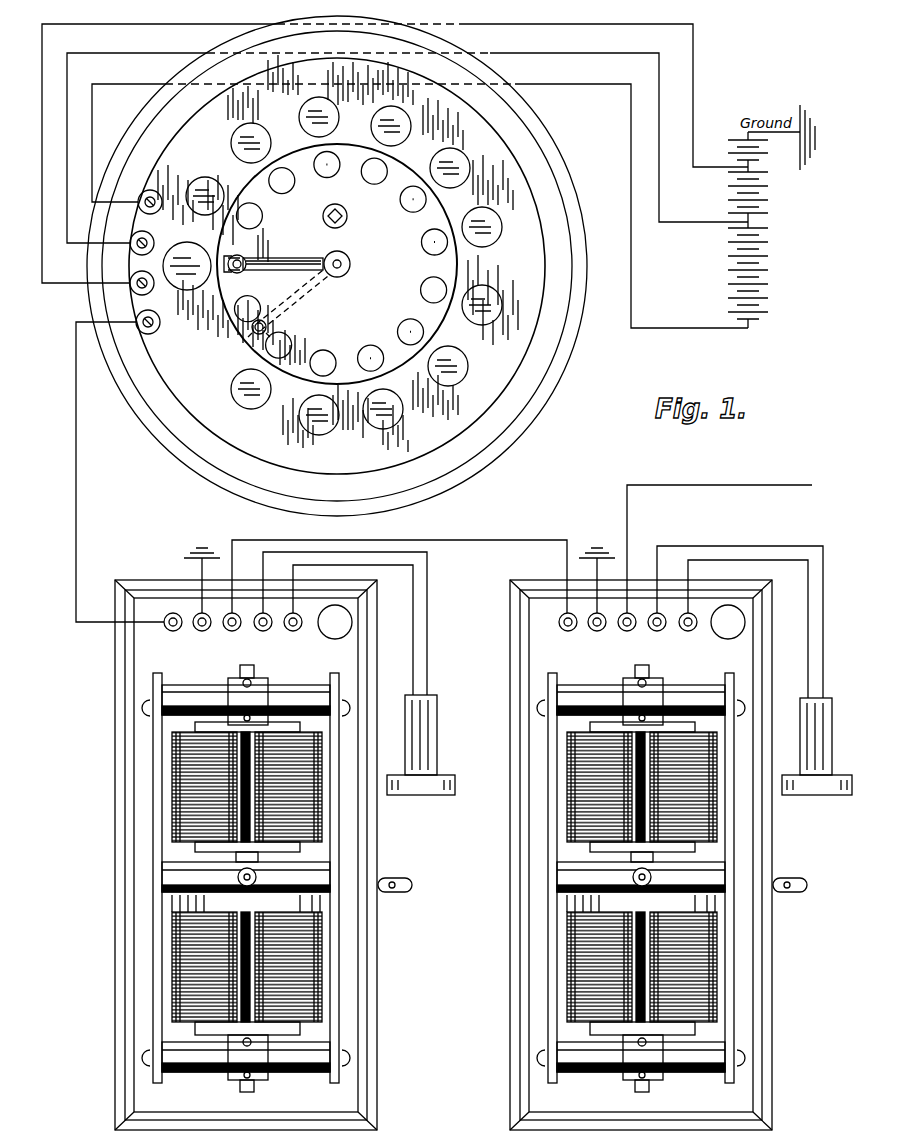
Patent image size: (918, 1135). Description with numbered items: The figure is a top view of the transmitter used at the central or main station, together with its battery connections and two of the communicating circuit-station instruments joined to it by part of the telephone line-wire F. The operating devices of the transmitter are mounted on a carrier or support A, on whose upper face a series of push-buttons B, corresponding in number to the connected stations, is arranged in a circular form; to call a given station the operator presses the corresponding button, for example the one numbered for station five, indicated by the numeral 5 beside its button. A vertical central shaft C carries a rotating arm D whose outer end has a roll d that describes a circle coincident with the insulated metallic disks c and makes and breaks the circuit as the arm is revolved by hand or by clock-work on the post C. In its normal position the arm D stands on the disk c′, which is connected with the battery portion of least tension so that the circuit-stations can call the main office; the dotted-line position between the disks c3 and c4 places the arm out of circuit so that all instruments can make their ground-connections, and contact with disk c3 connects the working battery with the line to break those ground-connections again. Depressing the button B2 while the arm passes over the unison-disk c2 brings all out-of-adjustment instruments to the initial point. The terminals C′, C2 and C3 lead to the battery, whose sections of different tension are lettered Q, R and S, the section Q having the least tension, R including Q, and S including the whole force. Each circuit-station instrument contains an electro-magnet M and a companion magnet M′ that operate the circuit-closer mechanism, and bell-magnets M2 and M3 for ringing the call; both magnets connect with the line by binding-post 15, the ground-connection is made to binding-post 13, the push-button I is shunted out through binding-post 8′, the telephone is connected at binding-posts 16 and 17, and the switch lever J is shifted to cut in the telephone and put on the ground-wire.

The carrier or support A is at (583, 148).
The push-buttons B is at (366, 266).
The push-button B2 is at (193, 233).
The insulated contact-point 5 is at (514, 215).
The vertical central shaft C is at (248, 274).
The metallic insulated disk C′ is at (151, 329).
The unison-disk C2 is at (407, 154).
The insulated disk C3 is at (420, 206).
The insulated disks c is at (358, 267).
The metallic insulated disk c′ is at (231, 274).
The unison-disk c2 is at (249, 216).
The insulated disk c3 is at (248, 309).
The insulated disk c4 is at (279, 345).
The roll d is at (242, 253).
The rotating arm D is at (283, 252).
The battery section Q is at (754, 149).
The battery section R is at (755, 194).
The battery section S is at (755, 275).
The line-wire F is at (321, 472).
The binding-post 15 is at (370, 630).
The binding-post 13 is at (399, 598).
The binding-post 8′ is at (517, 566).
The binding-post 16 is at (538, 622).
The binding-post 17 is at (546, 629).
The push-button I is at (531, 622).
The switch lever J is at (592, 872).
The electro-magnet M is at (402, 787).
The electro-magnet M′ is at (486, 787).
The bell-magnet M2 is at (402, 967).
The bell-magnet M3 is at (486, 967).